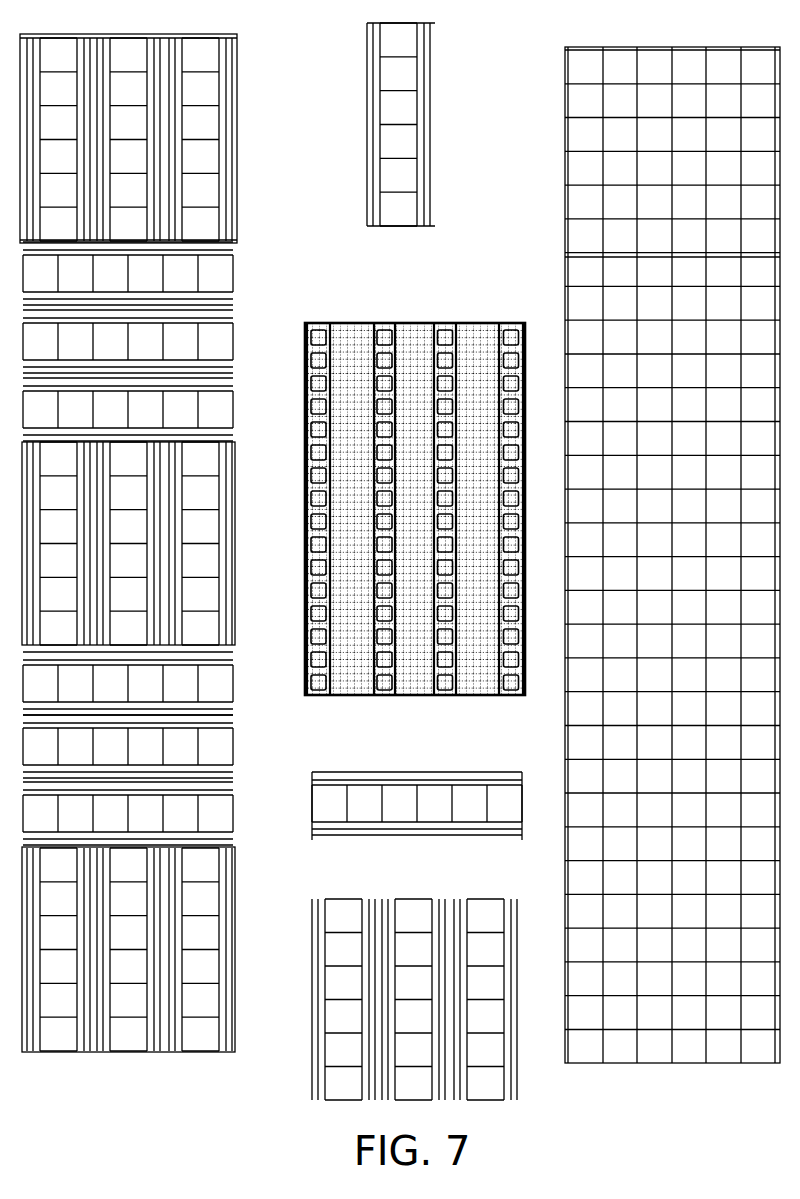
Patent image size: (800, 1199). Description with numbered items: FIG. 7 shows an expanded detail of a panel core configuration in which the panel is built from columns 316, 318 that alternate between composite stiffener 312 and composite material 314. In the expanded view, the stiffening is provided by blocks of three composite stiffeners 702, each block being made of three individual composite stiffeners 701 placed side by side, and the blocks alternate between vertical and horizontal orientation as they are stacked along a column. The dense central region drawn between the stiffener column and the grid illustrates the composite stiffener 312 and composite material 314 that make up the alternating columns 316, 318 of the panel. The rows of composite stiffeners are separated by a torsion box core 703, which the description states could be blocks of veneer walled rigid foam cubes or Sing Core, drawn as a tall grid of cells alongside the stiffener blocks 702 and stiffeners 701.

The composite stiffener 312 is at (322, 333).
The composite material 314 is at (348, 333).
The column 316 is at (178, 684).
The column 318 is at (560, 583).
The composite stiffener 701 is at (417, 572).
The block of three composite stiffeners 702 is at (533, 913).
The torsion box core 703 is at (672, 544).